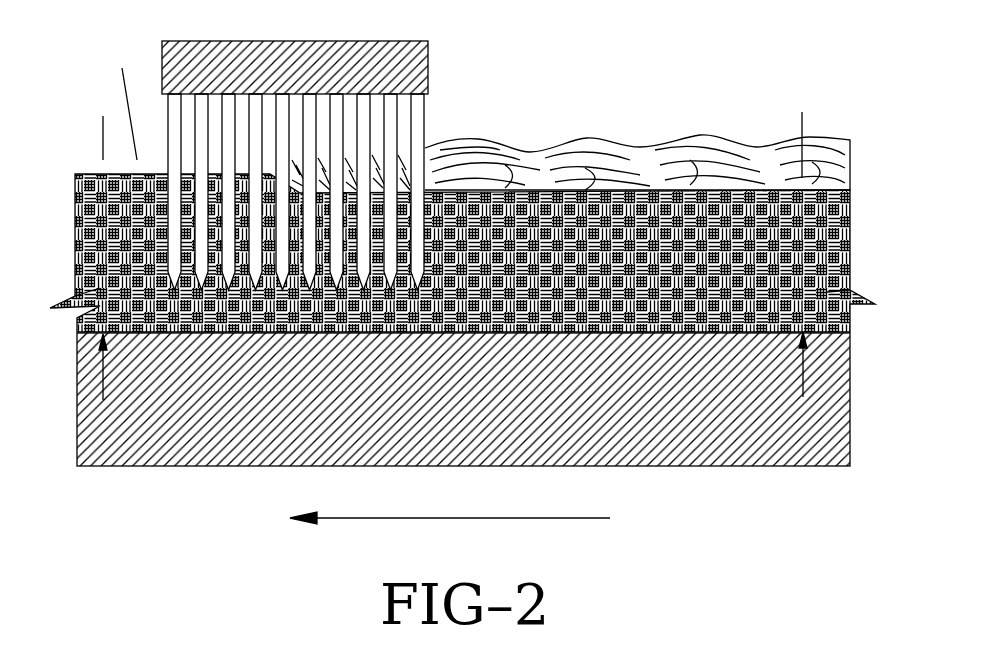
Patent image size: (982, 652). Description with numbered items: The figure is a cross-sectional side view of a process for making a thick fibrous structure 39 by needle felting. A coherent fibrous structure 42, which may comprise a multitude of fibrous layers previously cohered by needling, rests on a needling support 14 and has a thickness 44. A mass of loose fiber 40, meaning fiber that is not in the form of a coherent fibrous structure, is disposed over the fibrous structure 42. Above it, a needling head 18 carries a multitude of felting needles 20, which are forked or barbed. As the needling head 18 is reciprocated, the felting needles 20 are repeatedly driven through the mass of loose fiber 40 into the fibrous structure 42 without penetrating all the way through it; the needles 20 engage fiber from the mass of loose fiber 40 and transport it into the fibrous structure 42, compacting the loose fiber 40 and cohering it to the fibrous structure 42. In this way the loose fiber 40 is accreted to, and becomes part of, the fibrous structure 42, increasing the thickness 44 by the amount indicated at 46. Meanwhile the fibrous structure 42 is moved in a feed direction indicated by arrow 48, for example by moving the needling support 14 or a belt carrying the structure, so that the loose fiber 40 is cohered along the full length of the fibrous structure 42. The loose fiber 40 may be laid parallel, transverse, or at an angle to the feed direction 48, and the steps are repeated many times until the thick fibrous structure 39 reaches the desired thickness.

The needling support 14 is at (202, 438).
The needling head 18 is at (415, 66).
The felting needles 20 is at (415, 120).
The thick fibrous structure 39 is at (140, 173).
The mass of loose fiber 40 is at (590, 142).
The coherent fibrous structure 42 is at (863, 190).
The thickness 44 is at (802, 190).
The increase in thickness 46 is at (103, 173).
The feed direction 48 is at (450, 518).